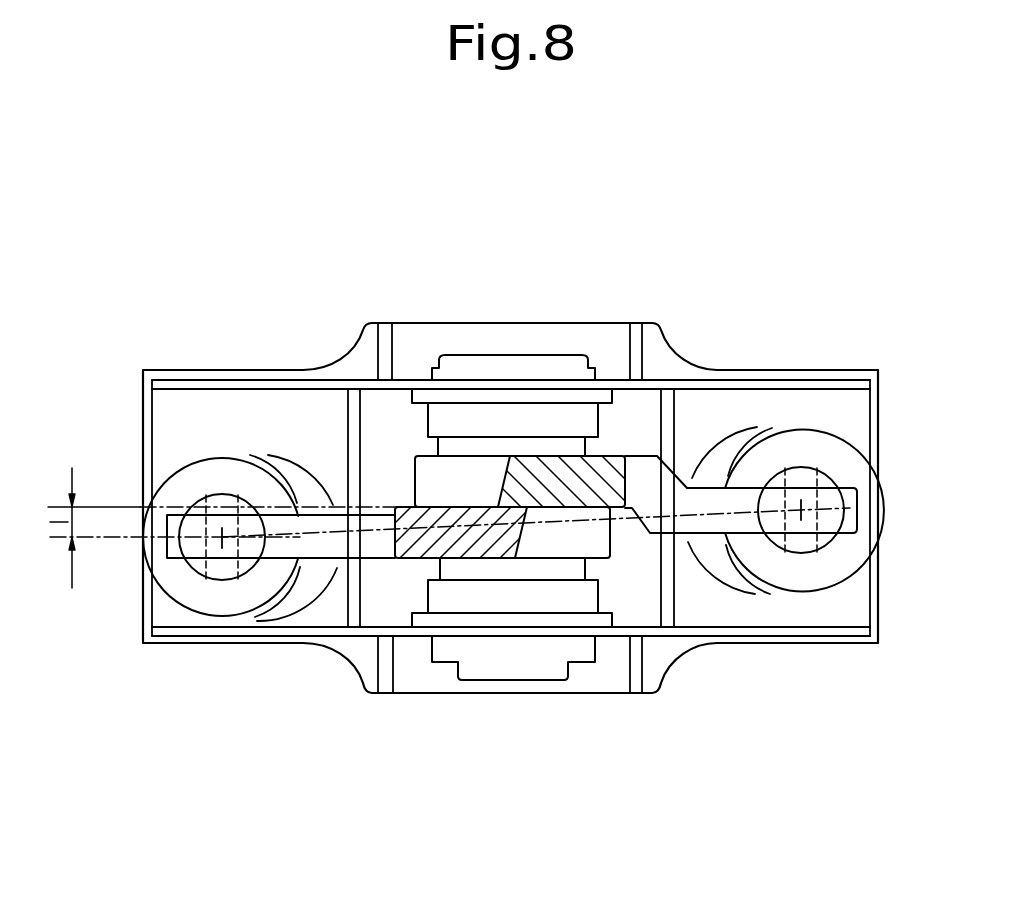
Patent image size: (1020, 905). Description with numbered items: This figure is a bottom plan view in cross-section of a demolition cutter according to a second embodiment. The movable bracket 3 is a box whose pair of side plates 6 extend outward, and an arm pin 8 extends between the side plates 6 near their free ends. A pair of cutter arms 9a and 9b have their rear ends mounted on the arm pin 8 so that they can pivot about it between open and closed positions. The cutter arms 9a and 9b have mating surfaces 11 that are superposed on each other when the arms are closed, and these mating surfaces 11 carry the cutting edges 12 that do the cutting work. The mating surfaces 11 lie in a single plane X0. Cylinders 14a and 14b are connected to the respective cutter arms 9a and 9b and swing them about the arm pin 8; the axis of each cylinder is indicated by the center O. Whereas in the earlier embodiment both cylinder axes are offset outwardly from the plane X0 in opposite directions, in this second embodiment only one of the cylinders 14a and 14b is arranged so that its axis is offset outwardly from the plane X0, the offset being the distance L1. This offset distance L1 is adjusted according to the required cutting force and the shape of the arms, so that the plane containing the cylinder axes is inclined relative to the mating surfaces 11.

The movable bracket 3 is at (240, 376).
The side plates 6 is at (327, 363).
The arm pin 8 is at (544, 360).
The cutter arm 9a is at (452, 552).
The cutter arm 9b is at (607, 472).
The mating surfaces 11 is at (473, 505).
The cutting edges 12 is at (543, 507).
The cylinder 14a is at (208, 478).
The cylinder 14b is at (808, 452).
The cylinder axis O is at (220, 540).
The plane X0 is at (130, 507).
The offset distance L1 is at (68, 522).